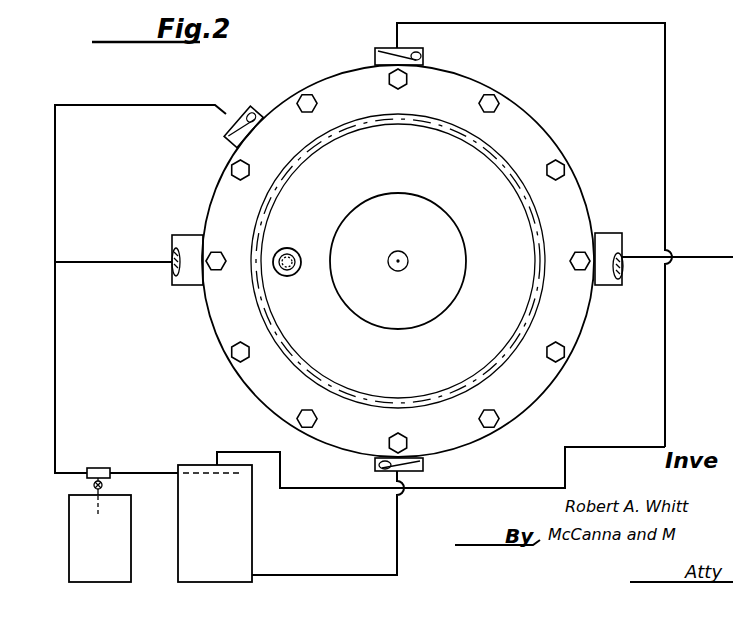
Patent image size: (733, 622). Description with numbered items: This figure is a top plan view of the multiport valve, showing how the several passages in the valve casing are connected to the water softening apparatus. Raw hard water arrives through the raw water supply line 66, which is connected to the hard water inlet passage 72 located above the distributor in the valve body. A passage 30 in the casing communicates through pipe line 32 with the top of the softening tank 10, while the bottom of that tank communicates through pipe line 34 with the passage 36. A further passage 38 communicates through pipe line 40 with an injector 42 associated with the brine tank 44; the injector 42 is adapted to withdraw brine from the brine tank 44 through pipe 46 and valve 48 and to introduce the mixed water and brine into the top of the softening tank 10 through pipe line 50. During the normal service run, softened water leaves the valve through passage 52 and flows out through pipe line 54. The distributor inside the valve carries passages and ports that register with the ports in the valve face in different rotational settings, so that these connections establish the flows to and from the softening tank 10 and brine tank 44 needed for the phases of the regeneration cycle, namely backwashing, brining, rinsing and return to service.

The softening tank 10 is at (242, 538).
The passage 30 is at (424, 52).
The pipe line 32 is at (668, 305).
The pipe line 34 is at (397, 535).
The passage 36 is at (424, 464).
The passage 38 is at (248, 112).
The pipe line 40 is at (168, 108).
The injector 42 is at (100, 467).
The brine tank 44 is at (132, 547).
The pipe 46 is at (100, 517).
The valve 48 is at (94, 486).
The pipe line 50 is at (140, 472).
The passage 52 is at (188, 278).
The pipe line 54 is at (110, 265).
The raw water supply line 66 is at (685, 255).
The hard water inlet passage 72 is at (610, 240).